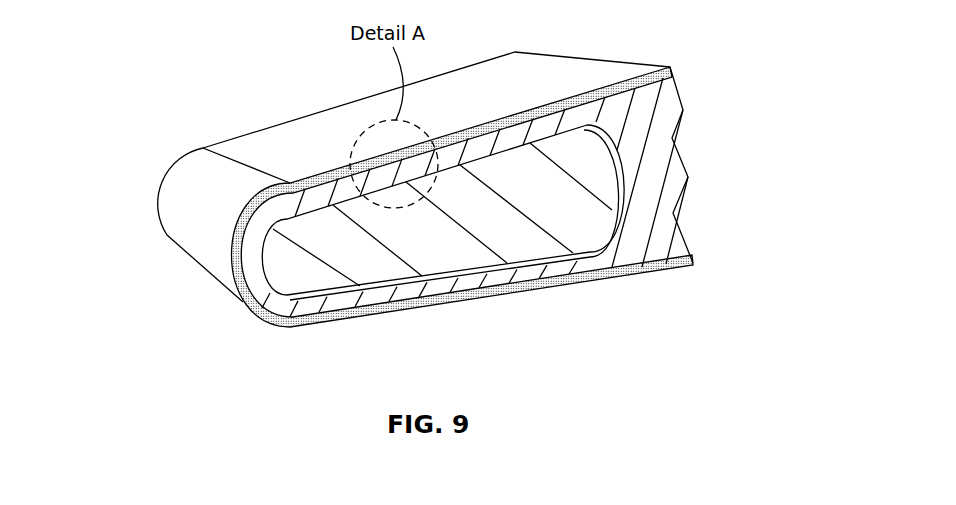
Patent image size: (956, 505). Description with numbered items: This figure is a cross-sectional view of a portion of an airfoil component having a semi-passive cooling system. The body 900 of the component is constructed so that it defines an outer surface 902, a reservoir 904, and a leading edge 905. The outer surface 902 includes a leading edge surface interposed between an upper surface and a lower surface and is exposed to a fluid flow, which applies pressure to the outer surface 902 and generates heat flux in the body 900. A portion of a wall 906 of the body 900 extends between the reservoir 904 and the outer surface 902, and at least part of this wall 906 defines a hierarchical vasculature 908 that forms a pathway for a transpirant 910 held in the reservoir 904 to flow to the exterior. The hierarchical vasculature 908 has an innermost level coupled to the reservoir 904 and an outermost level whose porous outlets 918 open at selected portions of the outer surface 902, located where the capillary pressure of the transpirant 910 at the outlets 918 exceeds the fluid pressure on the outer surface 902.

The body 900 is at (694, 124).
The outer surface 902 is at (475, 83).
The reservoir 904 is at (597, 254).
The leading edge 905 is at (170, 210).
The wall 906 is at (247, 258).
The hierarchical vasculature 908 is at (324, 217).
The transpirant 910 is at (513, 252).
The outlets 918 is at (337, 130).